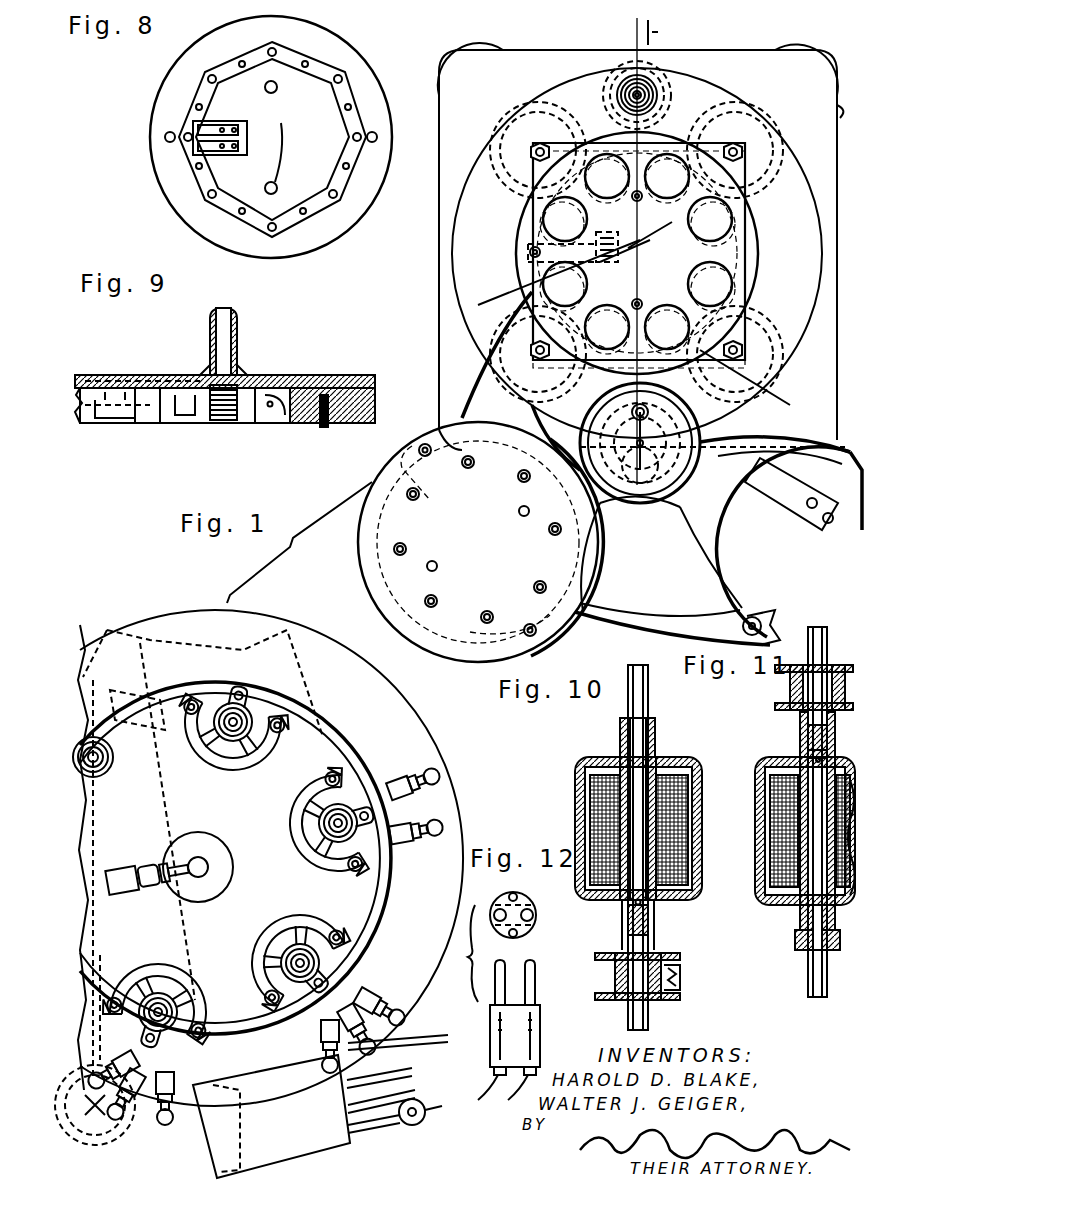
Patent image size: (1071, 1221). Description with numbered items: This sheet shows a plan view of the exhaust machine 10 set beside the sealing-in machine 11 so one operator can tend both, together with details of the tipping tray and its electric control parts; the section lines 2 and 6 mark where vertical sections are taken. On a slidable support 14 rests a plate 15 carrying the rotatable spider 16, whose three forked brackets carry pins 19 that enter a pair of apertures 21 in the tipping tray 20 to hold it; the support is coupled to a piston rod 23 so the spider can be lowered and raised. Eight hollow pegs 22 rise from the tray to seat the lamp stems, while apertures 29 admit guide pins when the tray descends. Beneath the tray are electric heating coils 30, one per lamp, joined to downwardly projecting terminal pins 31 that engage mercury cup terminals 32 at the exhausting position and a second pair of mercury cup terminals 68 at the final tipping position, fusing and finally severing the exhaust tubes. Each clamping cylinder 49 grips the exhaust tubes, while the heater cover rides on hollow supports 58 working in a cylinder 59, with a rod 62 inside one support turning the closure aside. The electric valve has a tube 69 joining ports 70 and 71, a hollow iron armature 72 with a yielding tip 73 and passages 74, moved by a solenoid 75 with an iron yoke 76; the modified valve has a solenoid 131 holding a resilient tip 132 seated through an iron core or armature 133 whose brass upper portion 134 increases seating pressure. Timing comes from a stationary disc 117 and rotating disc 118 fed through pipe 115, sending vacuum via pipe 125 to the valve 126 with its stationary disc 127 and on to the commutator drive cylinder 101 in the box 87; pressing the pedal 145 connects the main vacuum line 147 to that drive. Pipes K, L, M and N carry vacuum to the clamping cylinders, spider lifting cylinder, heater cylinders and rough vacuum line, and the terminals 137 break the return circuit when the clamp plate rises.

In FIG. 1, the section line 2— 2 is at (641, 565).
In FIG. 1, the section line 6— 6 is at (631, 326).
In FIG. 1, the exhaust machine 10 is at (440, 332).
In FIG. 1, the sealing-in machine 11 is at (280, 622).
In FIG. 1, the slidable support 14 is at (638, 455).
In FIG. 1, the plate 15 is at (675, 468).
In FIG. 1, the spider 16 is at (480, 365).
In FIG. 1, the pins 19 is at (418, 447).
In FIG. 8, the tipping tray 20 is at (172, 198).
In FIG. 9, the tipping tray 20 is at (155, 373).
In FIG. 1, the tipping tray 20 is at (515, 254).
In FIG. 8, the apertures 21 is at (165, 137).
In FIG. 9, the hollow pegs 22 is at (238, 352).
In FIG. 1, the hollow pegs 22 is at (400, 515).
In FIG. 1, the piston rod 23 is at (641, 470).
In FIG. 8, the apertures 29 is at (279, 137).
In FIG. 8, the electric heating coils 30 is at (250, 215).
In FIG. 9, the electric heating coils 30 is at (232, 420).
In FIG. 8, the terminal pins 31 is at (238, 122).
In FIG. 1, the terminal pins 31 is at (614, 236).
In FIG. 1, the mercury cup terminals 32 is at (636, 256).
In FIG. 1, the cylinder 49 is at (495, 118).
In FIG. 1, the hollow supports 58 is at (633, 78).
In FIG. 1, the cylinder 59 is at (637, 32).
In FIG. 1, the rod 62 is at (616, 93).
In FIG. 1, the mercury cup terminals 68 is at (828, 522).
In FIG. 10, the tube 69 is at (656, 940).
In FIG. 10, the port 70 is at (628, 940).
In FIG. 10, the port 71 is at (622, 755).
In FIG. 10, the hollow iron armature 72 is at (650, 760).
In FIG. 10, the tip 73 is at (652, 918).
In FIG. 10, the passages 74 is at (625, 912).
In FIG. 10, the solenoid 75 is at (672, 825).
In FIG. 10, the iron yoke 76 is at (702, 850).
In FIG. 1, the box 87 is at (333, 1145).
In FIG. 1, the cylinder 101 is at (210, 1165).
In FIG. 1, the pipe 115 is at (392, 1000).
In FIG. 1, the stationary disc 117 is at (129, 1107).
In FIG. 1, the disc 118 is at (98, 1130).
In FIG. 1, the pipe 125 is at (100, 952).
In FIG. 1, the valve 126 is at (140, 650).
In FIG. 1, the stationary disc 127 is at (210, 925).
In FIG. 11, the solenoid 131 is at (775, 780).
In FIG. 11, the resilient tip 132 is at (808, 733).
In FIG. 11, the iron core or armature 133 is at (802, 915).
In FIG. 11, the upper portion of the armature 134 is at (808, 754).
In FIG. 1, the terminals 137 is at (528, 248).
In FIG. 12, the terminals 137 is at (510, 905).
In FIG. 1, the pedal 145 is at (120, 632).
In FIG. 1, the main vacuum line 147 is at (131, 689).
In FIG. 1, the pipe K is at (406, 1036).
In FIG. 1, the pipe L is at (387, 1068).
In FIG. 1, the pipe M is at (394, 1094).
In FIG. 1, the pipe N is at (404, 1111).